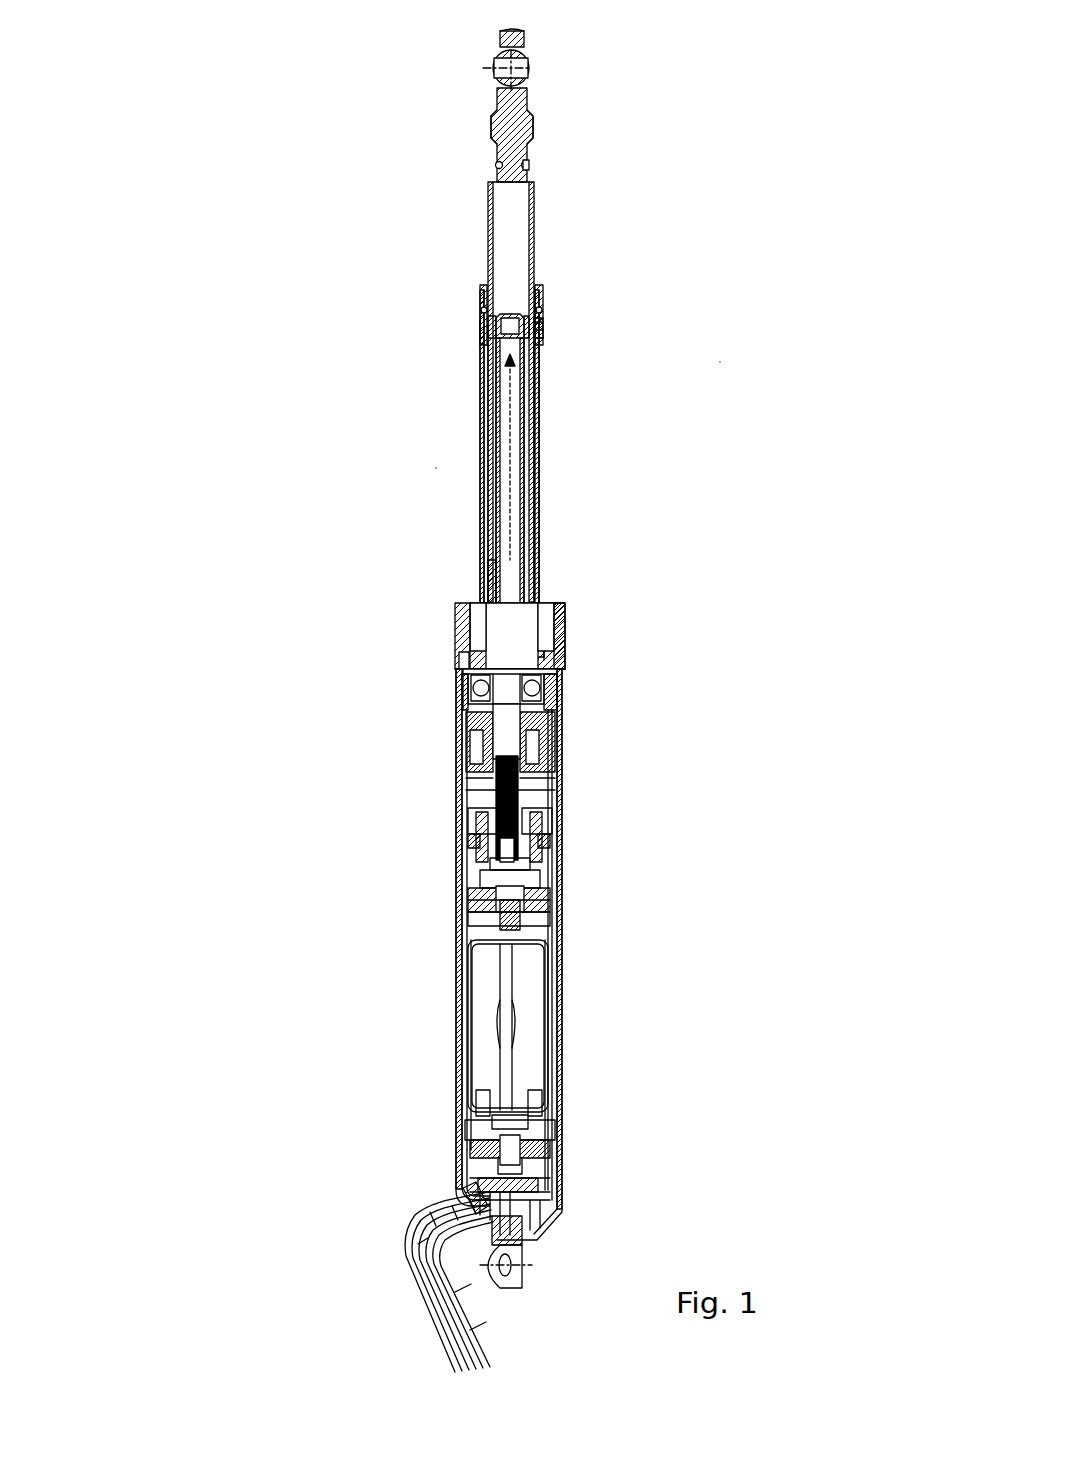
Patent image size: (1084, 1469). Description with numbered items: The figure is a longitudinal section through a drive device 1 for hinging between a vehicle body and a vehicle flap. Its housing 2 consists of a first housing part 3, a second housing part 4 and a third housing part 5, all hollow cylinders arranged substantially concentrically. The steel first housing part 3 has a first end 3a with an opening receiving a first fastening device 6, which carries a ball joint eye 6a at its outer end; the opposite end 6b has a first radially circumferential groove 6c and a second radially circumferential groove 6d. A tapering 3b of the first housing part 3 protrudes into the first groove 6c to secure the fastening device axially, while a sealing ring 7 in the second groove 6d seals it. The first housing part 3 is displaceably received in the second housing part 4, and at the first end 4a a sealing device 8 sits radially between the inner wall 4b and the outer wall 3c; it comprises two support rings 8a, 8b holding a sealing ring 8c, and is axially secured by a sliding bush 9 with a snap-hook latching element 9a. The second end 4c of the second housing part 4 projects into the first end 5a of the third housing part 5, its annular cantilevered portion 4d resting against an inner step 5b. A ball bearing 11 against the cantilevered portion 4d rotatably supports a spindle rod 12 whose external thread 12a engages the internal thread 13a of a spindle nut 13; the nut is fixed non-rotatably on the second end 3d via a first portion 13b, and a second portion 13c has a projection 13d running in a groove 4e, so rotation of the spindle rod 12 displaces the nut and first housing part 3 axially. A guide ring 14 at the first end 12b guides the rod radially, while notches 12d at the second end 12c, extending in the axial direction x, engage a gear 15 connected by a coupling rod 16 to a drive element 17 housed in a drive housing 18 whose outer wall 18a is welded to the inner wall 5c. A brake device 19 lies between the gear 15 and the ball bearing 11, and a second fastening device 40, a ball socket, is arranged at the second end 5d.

The drive device 1 is at (720, 362).
The housing 2 is at (436, 468).
The first housing part 3 is at (532, 255).
The first end of the first housing part 3a is at (532, 113).
The tapering (tapered portion) of the first housing part 3b is at (493, 135).
The outer wall of the first housing part 3c is at (485, 405).
The second end of the first housing part 3d is at (540, 583).
The second housing part 4 is at (537, 440).
The first end of the second housing part 4a is at (482, 350).
The inner wall of the second housing part 4b is at (538, 522).
The second end of the second housing part 4c is at (540, 630).
The annular cantilevered portion 4d is at (560, 678).
The groove 4e is at (545, 638).
The third housing part 5 is at (562, 1028).
The first end of the third housing part 5a is at (562, 651).
The inner step of the third housing part 5b is at (558, 668).
The inner wall of the third housing part 5c is at (562, 1095).
The second end of the third housing part 5d is at (470, 1165).
The first fastening device 6 is at (538, 37).
The ball joint eye 6a is at (522, 68).
The end of the first fastening device 6b is at (498, 155).
The first radially circumferential groove 6c is at (534, 125).
The second radially circumferential groove 6d is at (530, 165).
The sealing ring 7 is at (527, 170).
The sealing device 8 is at (541, 320).
The support ring 8a is at (542, 322).
The support ring 8b is at (542, 338).
The sealing ring 8c is at (542, 330).
The sliding bush 9 is at (540, 287).
The latching element 9a is at (486, 302).
The ball bearing 11 is at (466, 685).
The spindle rod 12 is at (500, 493).
The external thread 12a is at (490, 585).
The first end of the spindle rod 12b is at (507, 325).
The second end of the spindle rod 12c is at (521, 775).
The notches 12d is at (470, 825).
The spindle nut 13 is at (470, 620).
The internal thread 13a is at (546, 605).
The first portion of the spindle nut 13b is at (479, 600).
The second portion of the spindle nut 13c is at (470, 635).
The projection 13d is at (465, 648).
The guide ring 14 is at (491, 330).
The gear 15 is at (466, 903).
The coupling rod 16 is at (505, 990).
The drive element 17 is at (557, 1150).
The drive housing 18 is at (560, 1075).
The outer wall of the drive housing 18a is at (464, 1070).
The brake device 19 is at (463, 748).
The second fastening device 40 is at (522, 1243).
The axial direction x is at (512, 413).